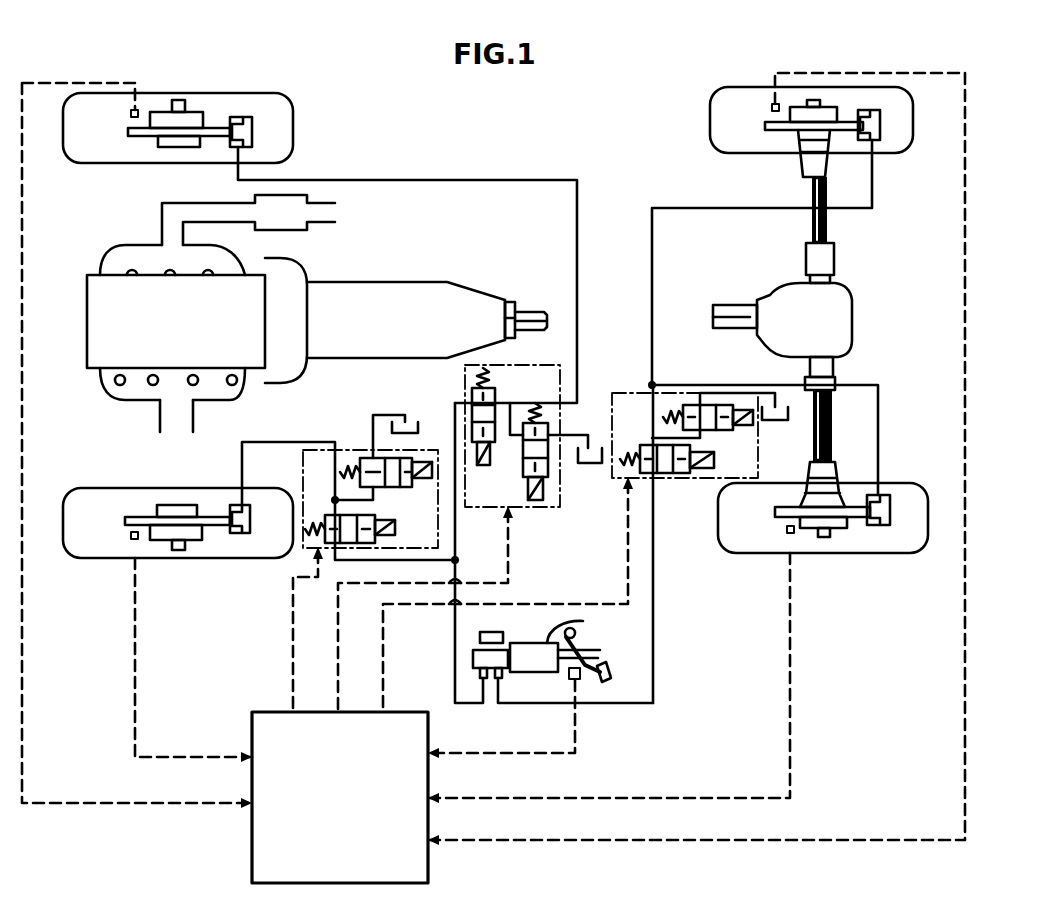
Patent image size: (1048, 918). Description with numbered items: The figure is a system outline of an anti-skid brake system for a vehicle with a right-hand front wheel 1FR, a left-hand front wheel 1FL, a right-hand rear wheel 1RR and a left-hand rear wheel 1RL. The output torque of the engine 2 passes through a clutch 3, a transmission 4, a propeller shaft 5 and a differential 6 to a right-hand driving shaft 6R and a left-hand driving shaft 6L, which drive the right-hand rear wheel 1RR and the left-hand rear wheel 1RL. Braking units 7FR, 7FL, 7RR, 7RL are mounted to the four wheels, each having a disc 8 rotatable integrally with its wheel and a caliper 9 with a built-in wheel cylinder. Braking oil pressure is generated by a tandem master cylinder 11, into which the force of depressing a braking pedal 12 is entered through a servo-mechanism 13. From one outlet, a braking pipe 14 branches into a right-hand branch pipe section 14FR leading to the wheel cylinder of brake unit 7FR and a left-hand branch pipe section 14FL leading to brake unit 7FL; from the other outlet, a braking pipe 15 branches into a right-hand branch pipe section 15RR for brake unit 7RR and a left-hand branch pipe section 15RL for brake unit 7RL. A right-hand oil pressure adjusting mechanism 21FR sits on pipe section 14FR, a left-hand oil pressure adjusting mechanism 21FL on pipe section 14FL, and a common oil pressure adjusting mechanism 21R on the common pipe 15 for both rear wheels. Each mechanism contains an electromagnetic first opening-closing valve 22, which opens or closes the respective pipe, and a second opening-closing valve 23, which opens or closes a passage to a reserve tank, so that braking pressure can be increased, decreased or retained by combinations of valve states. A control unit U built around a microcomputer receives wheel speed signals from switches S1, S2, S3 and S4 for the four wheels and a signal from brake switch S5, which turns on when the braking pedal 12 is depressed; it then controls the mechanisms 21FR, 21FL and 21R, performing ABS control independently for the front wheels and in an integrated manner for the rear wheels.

The control unit U is at (432, 867).
The right-hand front wheel 1FR is at (295, 140).
The left-hand front wheel 1FL is at (78, 553).
The right-hand rear wheel 1RR is at (912, 101).
The left-hand rear wheel 1RL is at (740, 545).
The engine 2 is at (85, 270).
The clutch 3 is at (300, 272).
The transmission 4 is at (397, 292).
The propeller shaft 5 is at (735, 304).
The differential 6 is at (838, 318).
The right-hand driving shaft 6R is at (827, 232).
The left-hand driving shaft 6L is at (832, 456).
The braking unit 7FR is at (205, 142).
The braking unit 7FL is at (220, 515).
The braking unit 7RR is at (846, 140).
The braking unit 7RL is at (857, 525).
The disc 8 is at (130, 140).
The caliper 9 is at (252, 118).
The master cylinder 11 is at (503, 633).
The braking pedal 12 is at (598, 658).
The servo-mechanism 13 is at (584, 622).
The braking pipe 14 is at (455, 655).
The right-hand branch pipe section 14FR is at (407, 273).
The left-hand branch pipe section 14FL is at (285, 442).
The braking pipe 15 is at (655, 582).
The right-hand branch pipe section 15RR is at (676, 207).
The left-hand branch pipe section 15RL is at (878, 445).
The left-hand oil pressure adjusting mechanism 21FL is at (347, 448).
The right-hand oil pressure adjusting mechanism 21FR is at (532, 508).
The common oil pressure adjusting mechanism 21R is at (706, 482).
The first opening-closing valve 22 is at (380, 518).
The second opening-closing valve 23 is at (405, 460).
The switch S1 is at (131, 114).
The switch S2 is at (135, 540).
The switch S3 is at (772, 108).
The switch S4 is at (790, 535).
The brake switch S5 is at (582, 680).